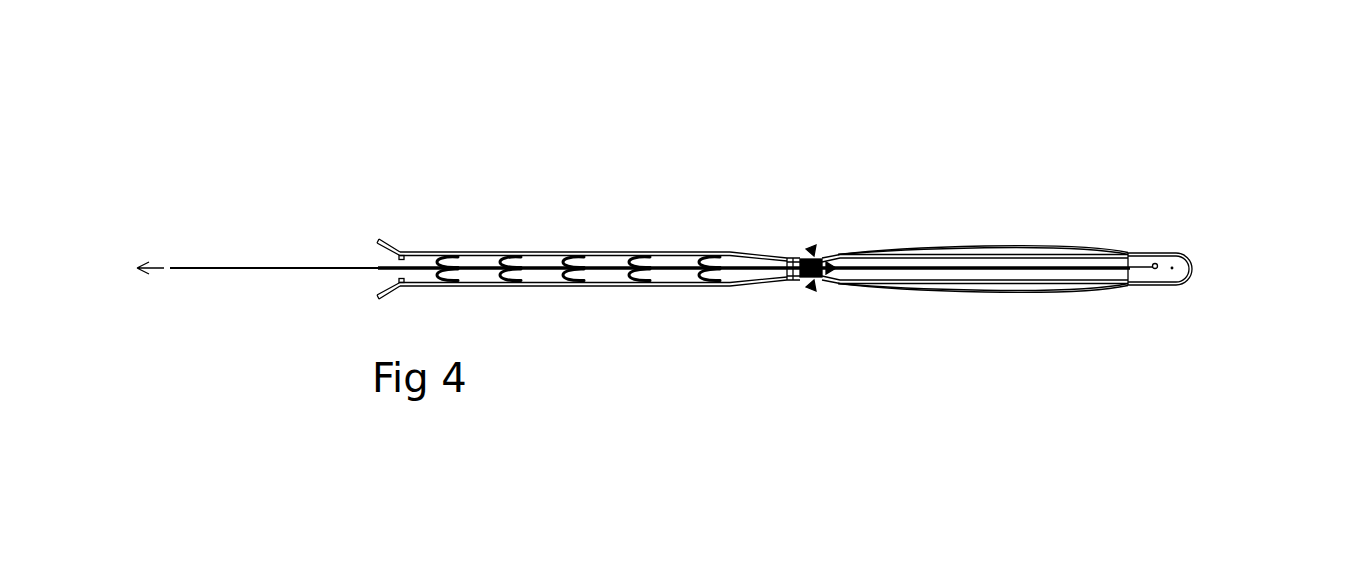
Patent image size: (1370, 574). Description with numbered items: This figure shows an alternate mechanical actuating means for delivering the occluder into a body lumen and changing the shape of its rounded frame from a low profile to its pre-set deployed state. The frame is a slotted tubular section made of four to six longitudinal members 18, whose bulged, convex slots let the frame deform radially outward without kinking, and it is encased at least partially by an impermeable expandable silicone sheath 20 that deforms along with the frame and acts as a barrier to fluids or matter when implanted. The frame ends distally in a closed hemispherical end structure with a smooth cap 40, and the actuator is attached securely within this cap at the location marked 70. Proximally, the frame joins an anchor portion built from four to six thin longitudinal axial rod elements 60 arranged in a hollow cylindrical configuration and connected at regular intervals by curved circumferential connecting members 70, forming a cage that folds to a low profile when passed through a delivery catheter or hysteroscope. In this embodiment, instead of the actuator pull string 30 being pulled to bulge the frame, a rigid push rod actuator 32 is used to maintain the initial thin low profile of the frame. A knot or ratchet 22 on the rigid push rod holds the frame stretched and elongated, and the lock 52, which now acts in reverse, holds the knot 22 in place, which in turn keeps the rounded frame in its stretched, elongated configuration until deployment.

The actuator pull string 30 is at (360, 265).
The longitudinal axial rod elements 60 is at (490, 289).
The circumferential connecting members 70 is at (700, 264).
The lock 52 is at (803, 258).
The knot or ratchet 22 is at (823, 263).
The longitudinal members 18 is at (1010, 290).
The impermeable expandable sheath 20 is at (993, 247).
The rigid push rod actuator 32 is at (977, 292).
The cap 40 is at (1190, 268).